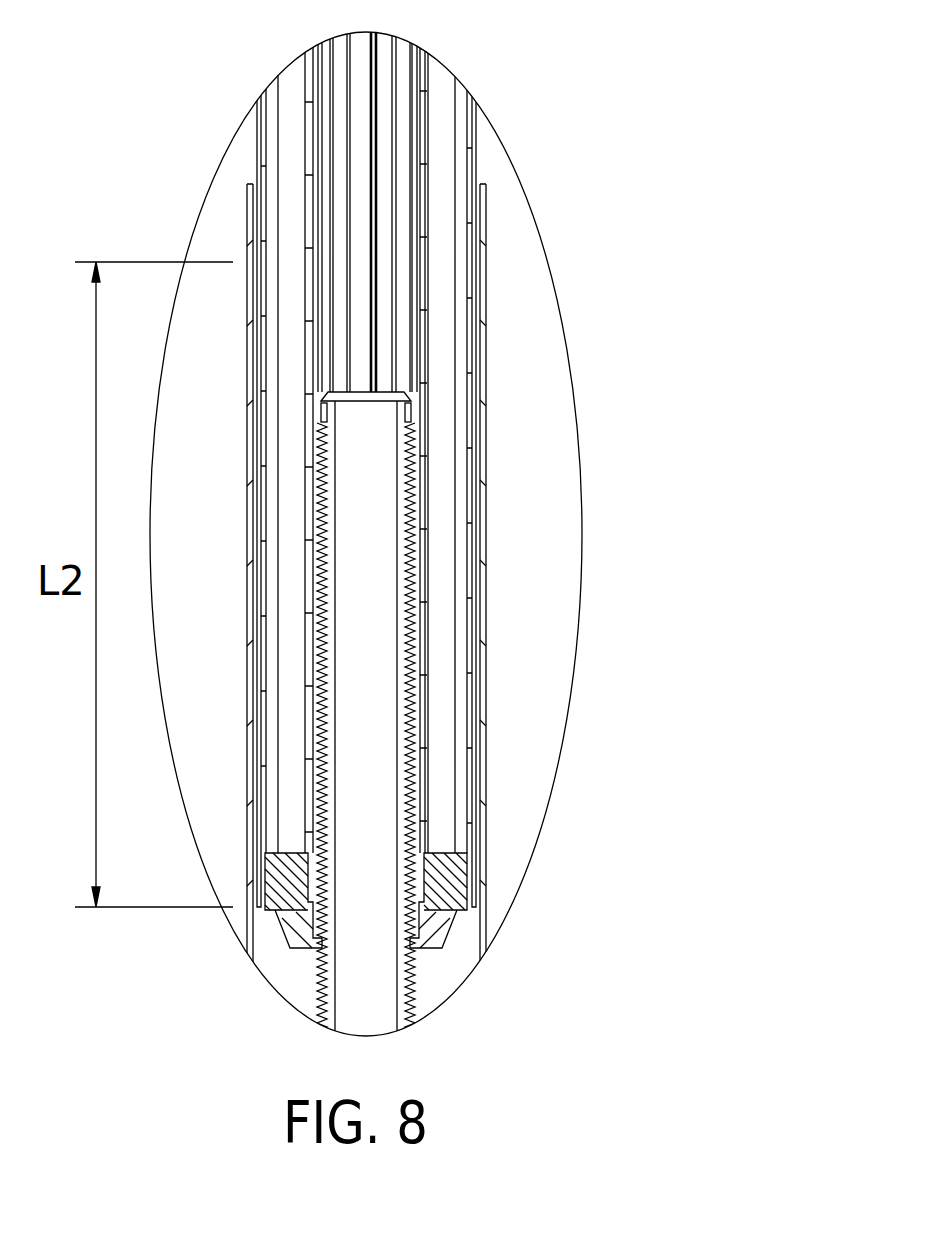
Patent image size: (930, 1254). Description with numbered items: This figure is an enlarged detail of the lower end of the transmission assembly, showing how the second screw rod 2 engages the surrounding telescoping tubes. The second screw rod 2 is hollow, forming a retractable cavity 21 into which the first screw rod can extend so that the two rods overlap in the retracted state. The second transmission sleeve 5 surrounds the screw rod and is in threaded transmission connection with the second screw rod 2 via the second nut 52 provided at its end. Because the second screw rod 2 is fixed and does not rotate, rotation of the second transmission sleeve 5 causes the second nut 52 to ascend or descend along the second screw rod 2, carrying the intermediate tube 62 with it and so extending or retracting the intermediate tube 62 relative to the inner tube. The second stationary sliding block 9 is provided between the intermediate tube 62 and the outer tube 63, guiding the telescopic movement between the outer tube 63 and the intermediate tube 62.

The second screw rod 2 is at (413, 687).
The retractable cavity 21 is at (368, 565).
The second transmission sleeve 5 is at (400, 297).
The second stationary sliding block 9 is at (477, 888).
The second nut 52 is at (433, 918).
The intermediate tube 62 is at (470, 134).
The outer tube 63 is at (484, 220).